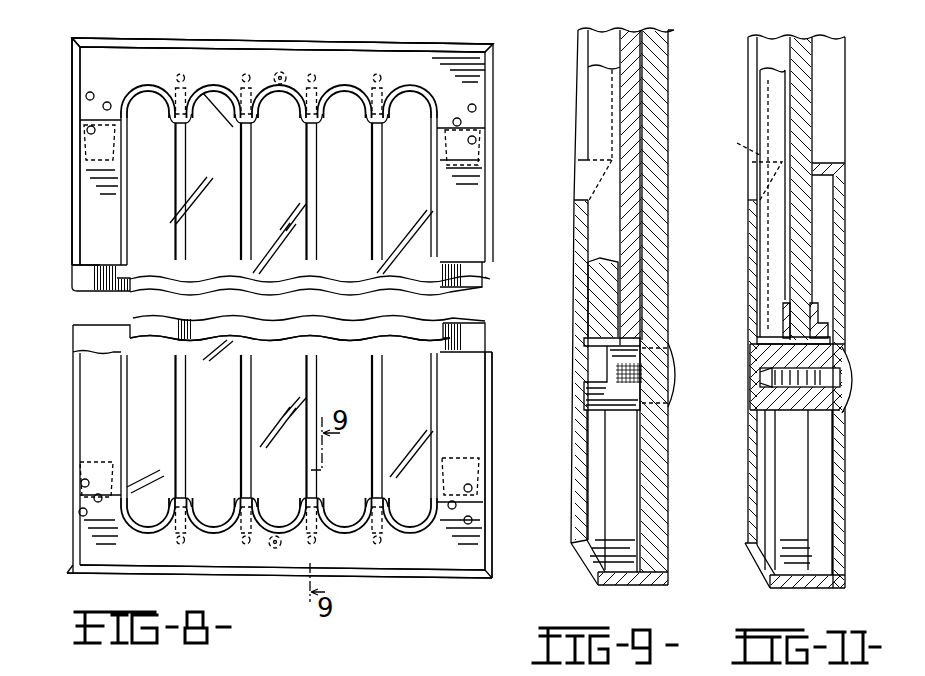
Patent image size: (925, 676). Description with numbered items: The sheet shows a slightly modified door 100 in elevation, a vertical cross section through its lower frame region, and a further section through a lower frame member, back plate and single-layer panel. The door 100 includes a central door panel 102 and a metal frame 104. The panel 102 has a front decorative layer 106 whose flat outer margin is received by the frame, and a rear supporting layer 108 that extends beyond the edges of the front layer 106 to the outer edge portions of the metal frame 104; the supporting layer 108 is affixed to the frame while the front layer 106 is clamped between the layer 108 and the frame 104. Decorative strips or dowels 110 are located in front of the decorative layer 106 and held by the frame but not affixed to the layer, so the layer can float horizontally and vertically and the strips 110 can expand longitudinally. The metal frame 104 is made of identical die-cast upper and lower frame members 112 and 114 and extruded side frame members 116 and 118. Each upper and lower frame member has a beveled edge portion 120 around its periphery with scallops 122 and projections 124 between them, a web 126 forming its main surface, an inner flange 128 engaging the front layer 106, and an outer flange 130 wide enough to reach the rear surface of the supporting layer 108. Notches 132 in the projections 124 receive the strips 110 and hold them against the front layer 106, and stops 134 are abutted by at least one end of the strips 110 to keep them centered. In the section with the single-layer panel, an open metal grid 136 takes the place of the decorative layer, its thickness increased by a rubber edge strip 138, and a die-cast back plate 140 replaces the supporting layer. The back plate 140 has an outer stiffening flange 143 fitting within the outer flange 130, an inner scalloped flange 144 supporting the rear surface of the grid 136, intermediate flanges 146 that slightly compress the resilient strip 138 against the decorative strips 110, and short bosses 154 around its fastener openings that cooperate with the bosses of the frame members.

In FIG. 8, the door 100 is at (503, 56).
In FIG. 8, the central door panel 102 is at (424, 264).
In FIG. 8, the metal frame 104 is at (69, 158).
In FIG. 8, the front decorative layer 106 is at (130, 293).
In FIG. 9, the front decorative layer 106 is at (665, 222).
In FIG. 8, the rear supporting layer 108 is at (395, 322).
In FIG. 9, the rear supporting layer 108 is at (668, 468).
In FIG. 8, the decorative strips or dowels 110 is at (371, 216).
In FIG. 9, the decorative strips or dowels 110 is at (588, 90).
In FIG. 8, the upper frame member 112 is at (360, 36).
In FIG. 8, the lower frame member 114 is at (378, 584).
In FIG. 9, the lower frame member 114 is at (567, 542).
In FIG. 11, the lower frame member 114 is at (739, 536).
In FIG. 8, the side frame member 116 is at (487, 353).
In FIG. 8, the side frame member 118 is at (68, 242).
In FIG. 8, the beveled edge portion 120 is at (72, 80).
In FIG. 9, the beveled edge portion 120 is at (588, 572).
In FIG. 8, the scallops 122 is at (184, 122).
In FIG. 8, the projections 124 is at (248, 121).
In FIG. 9, the projections 124 is at (588, 200).
In FIG. 8, the web 126 is at (205, 56).
In FIG. 9, the web 126 is at (580, 475).
In FIG. 8, the inner flange 128 is at (128, 108).
In FIG. 11, the inner flange 128 is at (748, 152).
In FIG. 9, the outer flange 130 is at (628, 576).
In FIG. 11, the outer flange 130 is at (792, 587).
In FIG. 9, the notches 132 is at (588, 160).
In FIG. 8, the stops 134 is at (176, 74).
In FIG. 9, the stops 134 is at (637, 343).
In FIG. 11, the open metal grid 136 is at (815, 80).
In FIG. 11, the rubber edge molding or strip 138 is at (830, 341).
In FIG. 11, the back plate 140 is at (851, 475).
In FIG. 11, the outer stiffening flange 143 is at (808, 574).
In FIG. 11, the inner scalloped flange 144 is at (820, 164).
In FIG. 11, the intermediate flanges 146 is at (823, 314).
In FIG. 11, the short bosses 154 is at (825, 408).